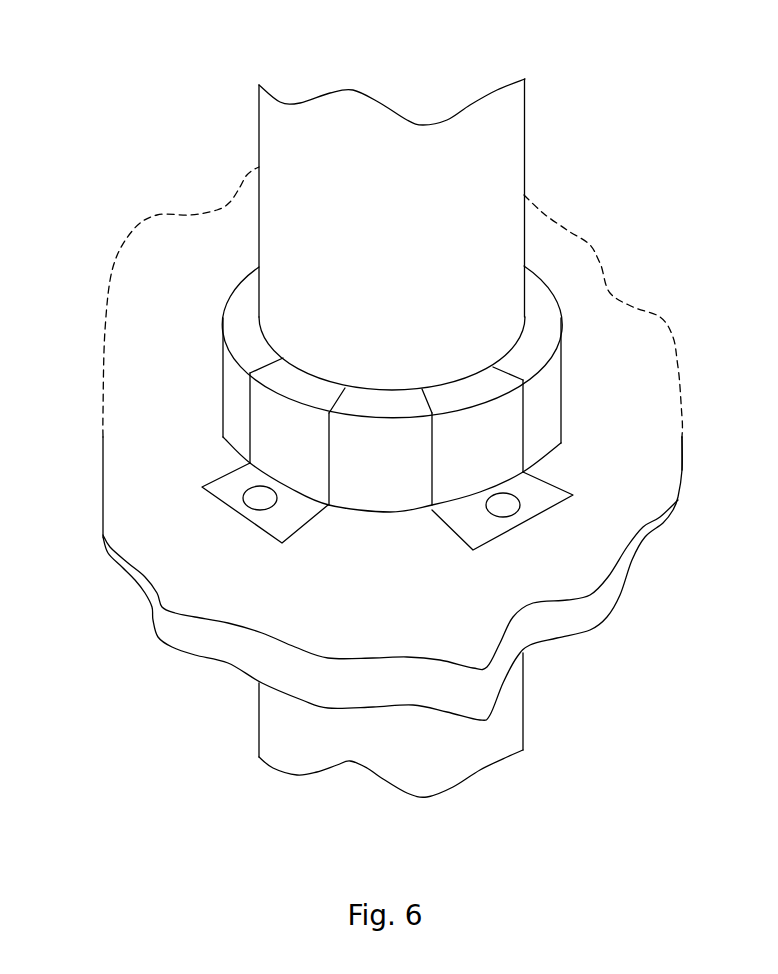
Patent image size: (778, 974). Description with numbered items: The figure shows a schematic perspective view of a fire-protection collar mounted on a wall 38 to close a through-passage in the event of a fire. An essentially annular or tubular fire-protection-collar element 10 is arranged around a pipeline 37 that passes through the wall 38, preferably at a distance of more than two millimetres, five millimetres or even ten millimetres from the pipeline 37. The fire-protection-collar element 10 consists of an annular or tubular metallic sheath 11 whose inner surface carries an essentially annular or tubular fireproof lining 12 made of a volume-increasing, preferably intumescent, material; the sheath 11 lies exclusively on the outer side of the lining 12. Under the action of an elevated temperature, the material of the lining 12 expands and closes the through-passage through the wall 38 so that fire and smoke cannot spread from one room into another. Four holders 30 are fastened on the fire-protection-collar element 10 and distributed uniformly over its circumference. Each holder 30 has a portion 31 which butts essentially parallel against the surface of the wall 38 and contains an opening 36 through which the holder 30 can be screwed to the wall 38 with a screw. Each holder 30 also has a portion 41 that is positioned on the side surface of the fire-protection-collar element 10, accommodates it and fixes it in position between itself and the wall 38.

The fire-protection-collar element 10 is at (407, 369).
The metallic sheath 11 is at (243, 392).
The fireproof lining 12 is at (244, 318).
The holder 30 is at (410, 316).
The portion 31 is at (402, 509).
The opening 36 is at (243, 501).
The pipeline 37 is at (360, 133).
The wall 38 is at (132, 540).
The portion 41 is at (478, 382).